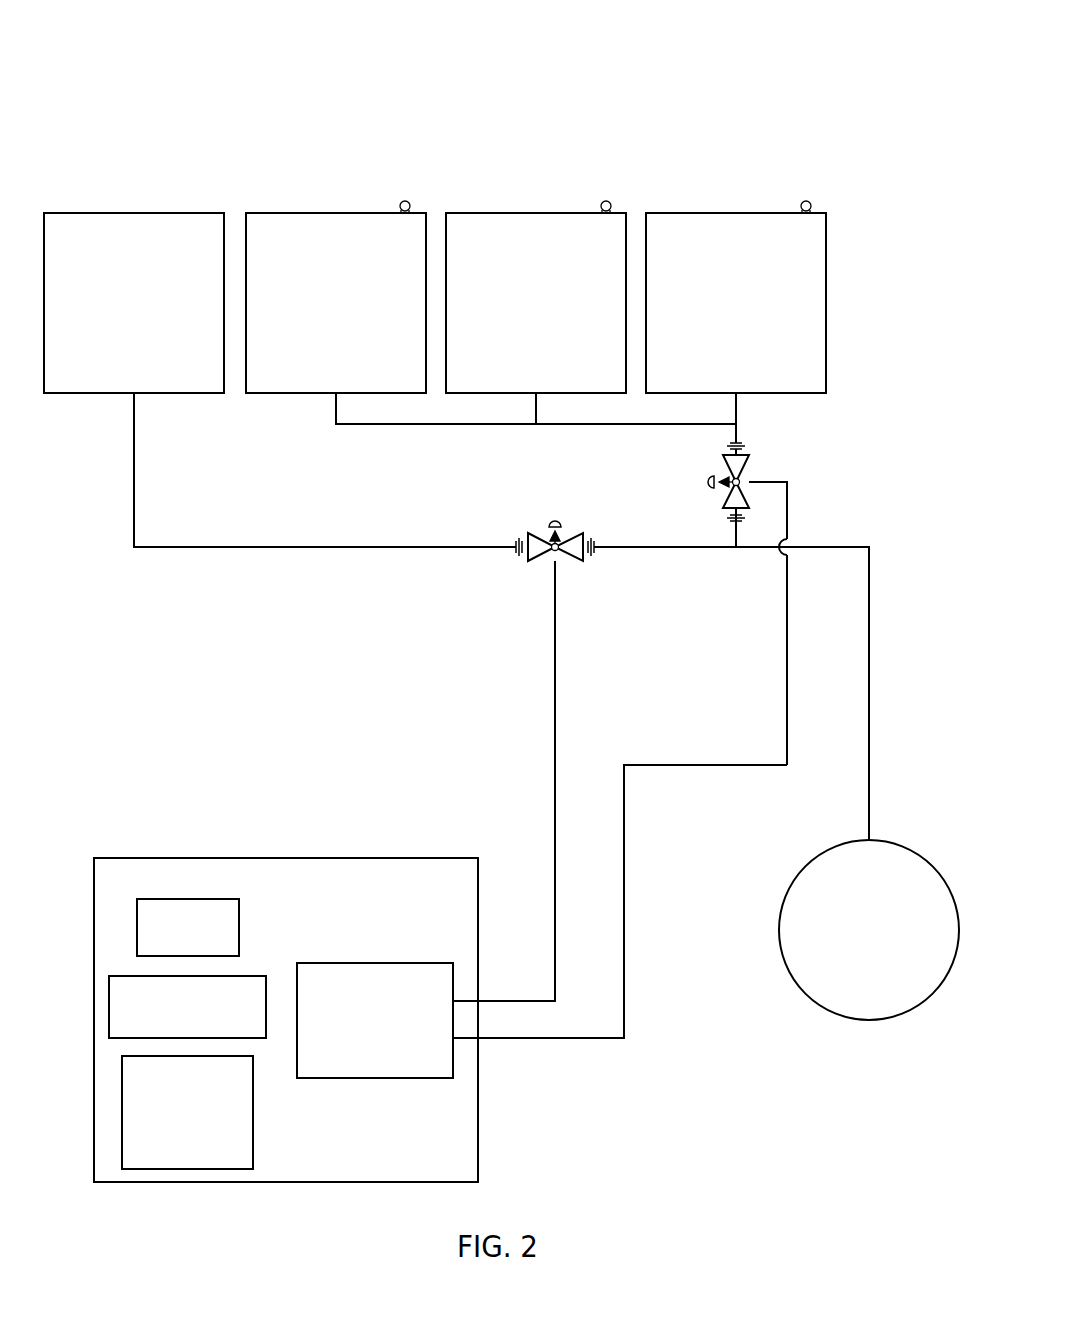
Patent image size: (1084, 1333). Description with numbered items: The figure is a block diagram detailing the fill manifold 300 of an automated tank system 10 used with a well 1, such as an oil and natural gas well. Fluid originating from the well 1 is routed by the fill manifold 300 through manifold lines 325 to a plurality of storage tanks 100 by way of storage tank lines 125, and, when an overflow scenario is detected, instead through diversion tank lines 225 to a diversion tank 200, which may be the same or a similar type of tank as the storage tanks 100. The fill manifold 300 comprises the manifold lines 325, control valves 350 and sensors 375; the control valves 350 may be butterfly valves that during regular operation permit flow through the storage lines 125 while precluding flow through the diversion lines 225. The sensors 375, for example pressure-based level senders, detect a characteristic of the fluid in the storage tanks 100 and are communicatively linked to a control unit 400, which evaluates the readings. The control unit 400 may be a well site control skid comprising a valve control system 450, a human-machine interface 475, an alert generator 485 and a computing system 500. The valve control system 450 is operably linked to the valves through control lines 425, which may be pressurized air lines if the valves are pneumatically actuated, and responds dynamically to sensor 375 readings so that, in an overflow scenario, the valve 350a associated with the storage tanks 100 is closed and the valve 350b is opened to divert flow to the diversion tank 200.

The automated tank system 10 is at (183, 52).
The storage tanks 100 is at (268, 213).
The diversion tank 200 is at (54, 213).
The sensors 375 is at (400, 207).
The storage tank lines 125 is at (405, 424).
The diversion tank lines 225 is at (262, 547).
The fill manifold 300 is at (856, 470).
The manifold lines 325 is at (664, 547).
The control valves 350 is at (633, 519).
The control valve 350a is at (727, 500).
The control valve 350b is at (565, 560).
The control lines 425 is at (555, 731).
The control unit 400 is at (286, 1020).
The human-machine interface 475 is at (188, 927).
The alert generator 485 is at (187, 1007).
The valve control system 450 is at (375, 1020).
The computing system 500 is at (187, 1112).
The well 1 is at (845, 1017).